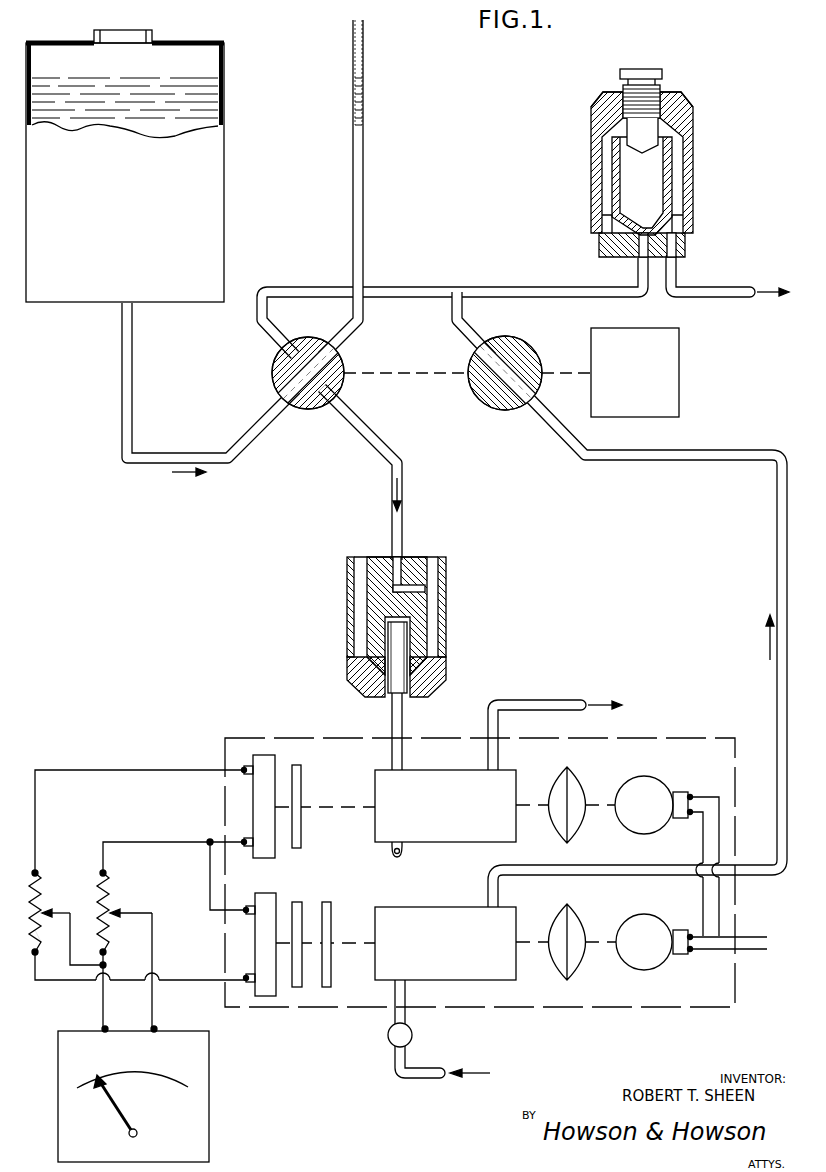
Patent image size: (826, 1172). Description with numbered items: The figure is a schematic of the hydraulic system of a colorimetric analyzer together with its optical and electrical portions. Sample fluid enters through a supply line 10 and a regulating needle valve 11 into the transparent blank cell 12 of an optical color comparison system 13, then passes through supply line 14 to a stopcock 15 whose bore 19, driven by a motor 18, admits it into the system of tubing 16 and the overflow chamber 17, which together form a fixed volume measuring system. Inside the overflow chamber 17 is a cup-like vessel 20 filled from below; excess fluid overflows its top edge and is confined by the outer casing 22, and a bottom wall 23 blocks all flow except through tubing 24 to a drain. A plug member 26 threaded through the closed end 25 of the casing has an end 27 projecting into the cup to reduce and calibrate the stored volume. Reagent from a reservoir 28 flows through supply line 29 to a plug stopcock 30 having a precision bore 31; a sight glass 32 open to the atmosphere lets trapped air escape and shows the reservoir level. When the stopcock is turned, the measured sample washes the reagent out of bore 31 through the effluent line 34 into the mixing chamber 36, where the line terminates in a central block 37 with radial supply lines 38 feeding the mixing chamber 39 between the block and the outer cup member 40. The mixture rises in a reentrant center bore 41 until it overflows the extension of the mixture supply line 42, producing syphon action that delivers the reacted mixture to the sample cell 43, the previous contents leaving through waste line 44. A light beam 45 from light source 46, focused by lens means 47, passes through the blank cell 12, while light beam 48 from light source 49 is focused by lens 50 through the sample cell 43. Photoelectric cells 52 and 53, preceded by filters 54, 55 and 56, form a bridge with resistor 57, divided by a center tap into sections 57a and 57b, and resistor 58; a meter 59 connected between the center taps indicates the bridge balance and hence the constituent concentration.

The supply line 10 is at (420, 1070).
The regulating needle valve 11 is at (413, 1038).
The blank cell 12 is at (438, 907).
The optical color comparison system 13 is at (655, 738).
The supply line 14 is at (777, 531).
The stopcock 15 is at (530, 352).
The system of tubing 16 is at (455, 318).
The overflow chamber 17 is at (694, 188).
The motor 18 is at (648, 356).
The bore 19 is at (496, 346).
The cup-like vessel 20 is at (672, 162).
The outer casing 22 is at (694, 224).
The bottom wall 23 is at (600, 246).
The tubing 24 is at (724, 298).
The closed end 25 is at (686, 100).
The plug member 26 is at (649, 70).
The end of plug member 27 is at (643, 148).
The reservoir 28 is at (128, 215).
The supply line 29 is at (226, 455).
The plug stopcock 30 is at (302, 340).
The precision bore 31 is at (284, 393).
The sight glass 32 is at (366, 205).
The effluent line 34 is at (396, 455).
The mixing chamber 36 is at (340, 620).
The central block 37 is at (420, 618).
The radial supply lines 38 is at (410, 588).
The mixing chamber volume 39 is at (358, 644).
The outer cup member 40 is at (353, 672).
The reentrant center bore 41 is at (412, 657).
The mixture supply line 42 is at (392, 718).
The sample cell 43 is at (440, 770).
The waste line 44 is at (522, 700).
The light beam 45 is at (524, 941).
The light source 46 is at (644, 916).
The lens means 47 is at (574, 919).
The light beam 48 is at (523, 803).
The light source 49 is at (651, 779).
The lens 50 is at (578, 782).
The photoelectric cell 52 is at (270, 893).
The photoelectric cell 53 is at (275, 770).
The filter 54 is at (300, 904).
The filter 55 is at (333, 922).
The filter 56 is at (302, 792).
The resistor 57 is at (38, 888).
The resistor section 57a is at (38, 906).
The resistor section 57b is at (40, 935).
The resistor 58 is at (108, 905).
The meter 59 is at (210, 1080).